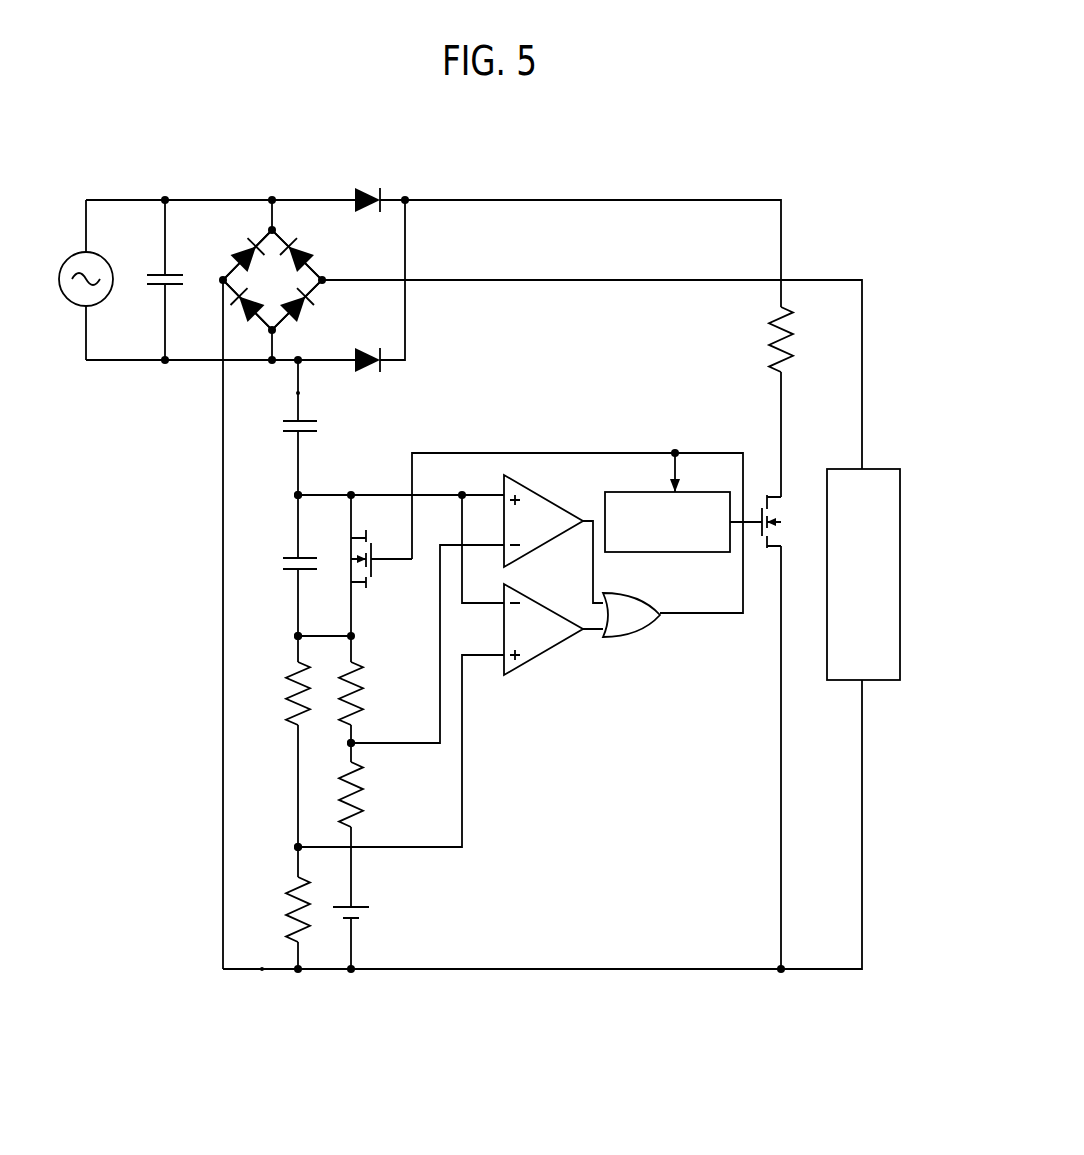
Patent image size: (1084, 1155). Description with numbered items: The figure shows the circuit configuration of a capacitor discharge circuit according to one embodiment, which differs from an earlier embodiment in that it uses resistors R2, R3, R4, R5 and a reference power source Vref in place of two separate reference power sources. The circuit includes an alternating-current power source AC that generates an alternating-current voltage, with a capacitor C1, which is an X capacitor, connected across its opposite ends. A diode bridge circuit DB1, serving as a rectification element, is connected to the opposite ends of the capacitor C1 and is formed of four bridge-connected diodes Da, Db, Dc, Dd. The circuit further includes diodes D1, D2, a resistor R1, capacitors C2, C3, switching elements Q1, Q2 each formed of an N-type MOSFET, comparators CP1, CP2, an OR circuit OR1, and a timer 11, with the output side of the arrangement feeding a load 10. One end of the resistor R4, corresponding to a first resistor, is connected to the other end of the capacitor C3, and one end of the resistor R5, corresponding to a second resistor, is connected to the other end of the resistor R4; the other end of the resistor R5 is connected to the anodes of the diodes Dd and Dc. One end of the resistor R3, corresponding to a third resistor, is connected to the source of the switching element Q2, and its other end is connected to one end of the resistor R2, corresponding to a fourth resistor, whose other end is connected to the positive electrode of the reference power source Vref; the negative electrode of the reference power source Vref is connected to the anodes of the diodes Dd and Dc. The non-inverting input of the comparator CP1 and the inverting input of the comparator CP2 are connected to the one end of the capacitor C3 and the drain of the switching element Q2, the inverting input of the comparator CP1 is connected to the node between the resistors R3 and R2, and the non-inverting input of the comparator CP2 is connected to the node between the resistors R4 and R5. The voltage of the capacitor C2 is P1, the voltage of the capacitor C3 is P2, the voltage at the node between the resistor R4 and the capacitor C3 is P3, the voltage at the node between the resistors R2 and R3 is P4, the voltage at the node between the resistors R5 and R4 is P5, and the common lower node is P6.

The load 10 is at (900, 535).
The timer 11 is at (705, 553).
The alternating-current power source AC is at (79, 266).
The capacitor C1 is at (157, 264).
The diode bridge circuit DB1 is at (265, 250).
The diode Da is at (308, 246).
The diode Db is at (310, 313).
The diode Dc is at (248, 323).
The diode Dd is at (235, 246).
The diode D1 is at (366, 183).
The diode D2 is at (367, 378).
The resistor R1 is at (796, 339).
The resistor R2 is at (368, 794).
The resistor R3 is at (368, 693).
The resistor R4 is at (281, 693).
The resistor R5 is at (281, 909).
The capacitor C2 is at (281, 430).
The capacitor C3 is at (281, 566).
The voltage of capacitor C2 P1 is at (298, 394).
The voltage of capacitor C3 P2 is at (298, 515).
The voltage at node between resistor R4 and capacitor C3 P3 is at (298, 614).
The voltage at node between resistor R2 and resistor R3 P4 is at (398, 745).
The voltage at node between resistor R5 and resistor R4 P5 is at (298, 781).
The node P6 is at (266, 972).
The switching element Q1 is at (789, 521).
The switching element Q2 is at (381, 569).
The comparator CP1 is at (543, 515).
The comparator CP2 is at (543, 623).
The OR circuit OR1 is at (631, 633).
The reference power source Vref is at (376, 916).